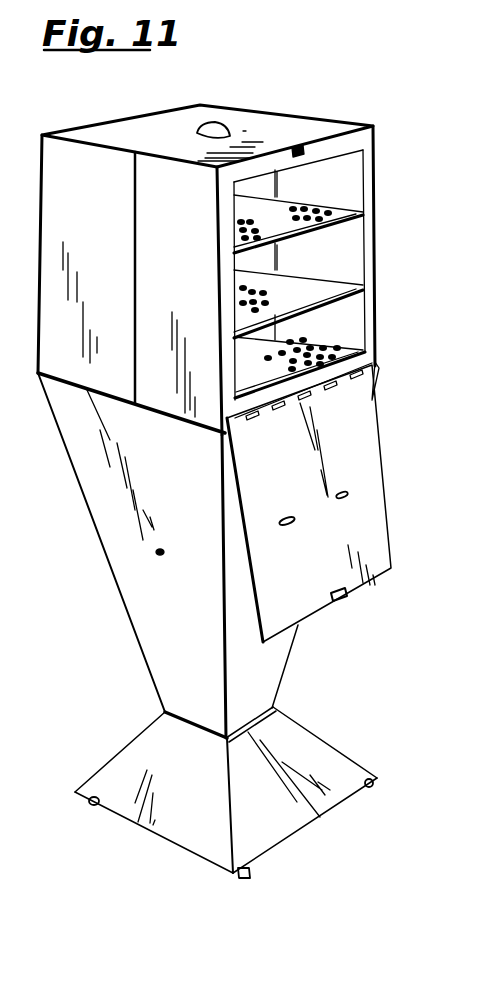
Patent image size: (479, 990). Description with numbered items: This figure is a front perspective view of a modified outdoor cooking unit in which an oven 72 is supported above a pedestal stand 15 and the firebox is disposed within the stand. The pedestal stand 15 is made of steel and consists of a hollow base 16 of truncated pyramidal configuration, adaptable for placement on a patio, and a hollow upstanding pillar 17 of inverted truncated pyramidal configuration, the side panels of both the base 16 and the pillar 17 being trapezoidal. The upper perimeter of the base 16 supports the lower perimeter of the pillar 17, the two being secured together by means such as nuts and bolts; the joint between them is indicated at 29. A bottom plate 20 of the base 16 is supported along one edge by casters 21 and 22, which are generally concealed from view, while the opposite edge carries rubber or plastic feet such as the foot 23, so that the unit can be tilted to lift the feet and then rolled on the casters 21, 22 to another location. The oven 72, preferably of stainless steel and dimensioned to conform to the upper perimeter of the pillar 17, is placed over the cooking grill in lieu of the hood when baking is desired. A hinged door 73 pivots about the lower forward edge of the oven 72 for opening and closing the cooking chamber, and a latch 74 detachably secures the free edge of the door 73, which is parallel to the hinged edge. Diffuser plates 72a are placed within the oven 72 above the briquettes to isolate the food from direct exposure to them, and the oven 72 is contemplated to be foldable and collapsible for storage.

The oven 72 is at (381, 136).
The diffuser plates 72a is at (335, 205).
The latch 74 is at (298, 148).
The hinged door 73 is at (357, 439).
The pillar 17 is at (106, 558).
The pedestal stand 15 is at (302, 658).
The base 16 is at (112, 757).
The hopper bottom joint 29 is at (163, 712).
The bottom plate 20 is at (168, 842).
The caster 21 is at (96, 806).
The caster 22 is at (236, 879).
The foot 23 is at (369, 789).